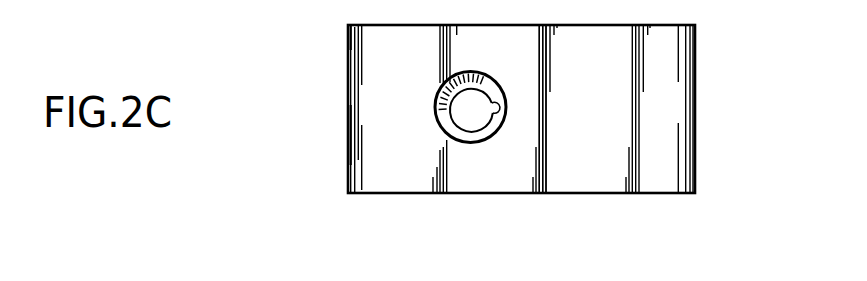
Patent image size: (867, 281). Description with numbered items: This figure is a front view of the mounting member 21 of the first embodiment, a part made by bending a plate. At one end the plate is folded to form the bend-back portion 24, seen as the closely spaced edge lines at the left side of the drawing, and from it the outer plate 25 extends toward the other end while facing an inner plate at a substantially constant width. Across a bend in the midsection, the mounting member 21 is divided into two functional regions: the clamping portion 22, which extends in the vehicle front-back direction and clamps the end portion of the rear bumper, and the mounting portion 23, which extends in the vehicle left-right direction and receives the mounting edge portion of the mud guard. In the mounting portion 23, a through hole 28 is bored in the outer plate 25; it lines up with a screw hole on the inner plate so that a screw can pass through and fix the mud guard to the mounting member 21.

The mounting member 21 is at (326, 65).
The clamping portion 22 is at (703, 104).
The mounting portion 23 is at (512, 162).
The bend-back portion 24 is at (348, 108).
The outer plate 25 is at (570, 237).
The through hole 28 is at (472, 137).